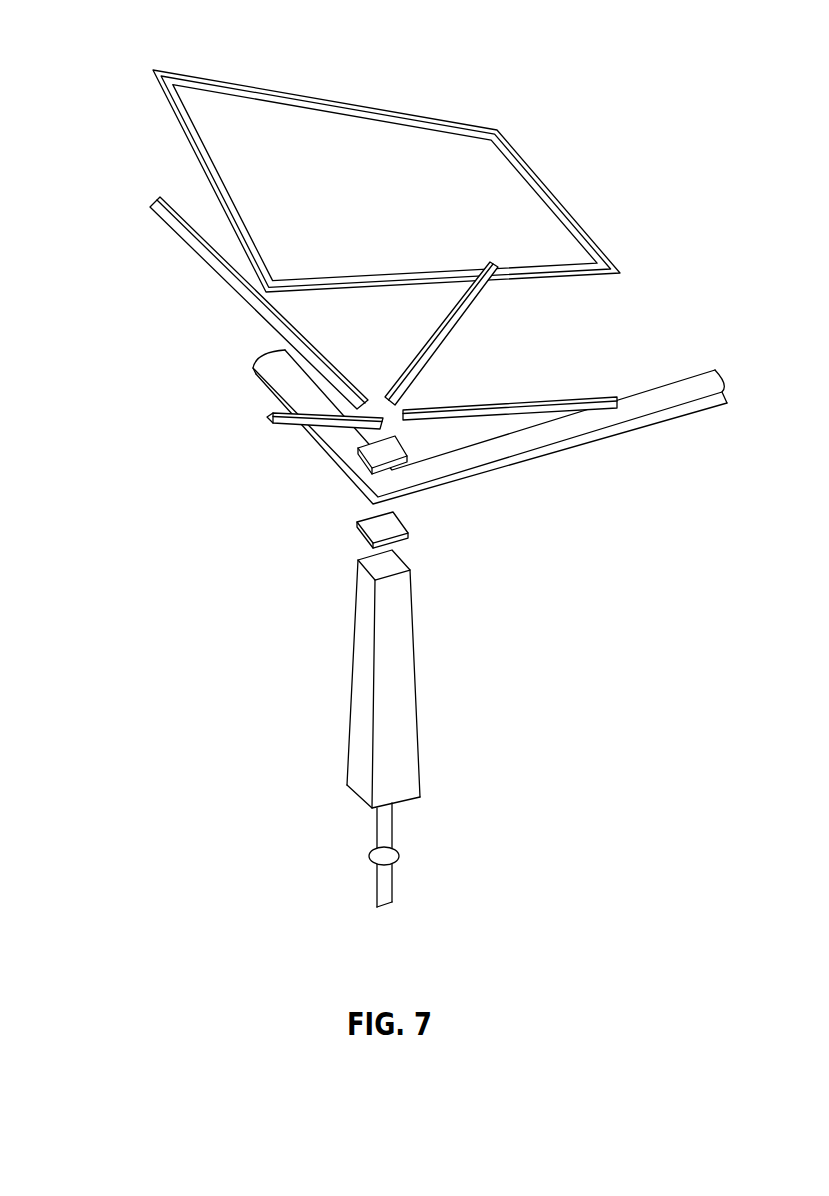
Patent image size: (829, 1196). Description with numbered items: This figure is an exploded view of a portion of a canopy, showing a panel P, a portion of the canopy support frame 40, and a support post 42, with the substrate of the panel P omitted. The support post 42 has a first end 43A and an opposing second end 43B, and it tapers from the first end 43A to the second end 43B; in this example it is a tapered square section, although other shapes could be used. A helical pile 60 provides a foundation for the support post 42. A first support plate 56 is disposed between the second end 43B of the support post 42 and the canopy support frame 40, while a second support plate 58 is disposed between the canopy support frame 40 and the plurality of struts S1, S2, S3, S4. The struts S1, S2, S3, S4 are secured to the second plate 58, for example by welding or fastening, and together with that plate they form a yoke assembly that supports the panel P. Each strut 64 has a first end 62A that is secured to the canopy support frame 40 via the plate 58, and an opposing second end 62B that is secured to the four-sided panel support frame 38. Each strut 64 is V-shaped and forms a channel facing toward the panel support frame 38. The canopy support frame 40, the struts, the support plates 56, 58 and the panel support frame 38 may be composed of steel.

The panel support frame 38 is at (265, 82).
The panel P is at (350, 73).
The canopy support frame 40 is at (670, 400).
The support post 42 is at (369, 689).
The first end 43A is at (357, 800).
The second end 43B is at (383, 567).
The first support plate 56 is at (362, 523).
The second support plate 58 is at (383, 457).
The helical pile 60 is at (392, 820).
The first end 62A is at (394, 364).
The second end 62B is at (147, 194).
The strut 64 is at (196, 251).
The first strut S1 is at (160, 218).
The second strut S2 is at (463, 322).
The third strut S3 is at (547, 397).
The fourth strut S4 is at (290, 432).